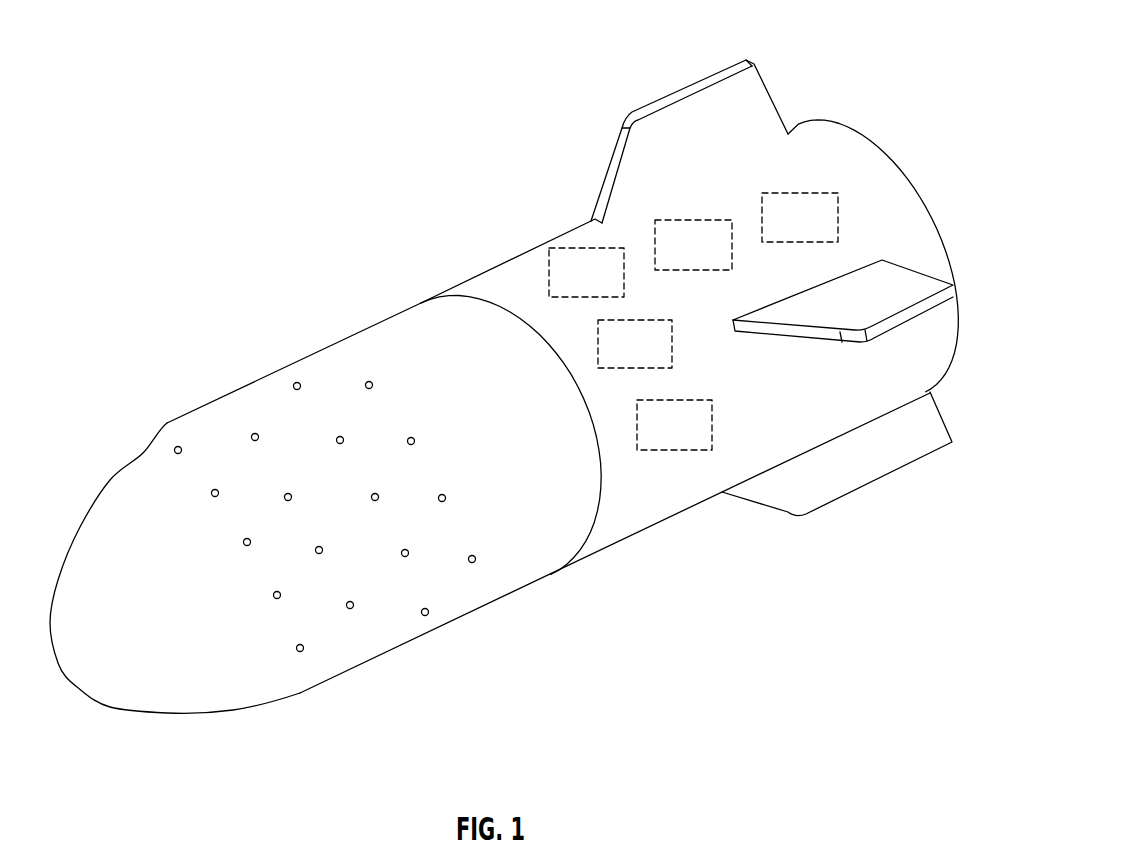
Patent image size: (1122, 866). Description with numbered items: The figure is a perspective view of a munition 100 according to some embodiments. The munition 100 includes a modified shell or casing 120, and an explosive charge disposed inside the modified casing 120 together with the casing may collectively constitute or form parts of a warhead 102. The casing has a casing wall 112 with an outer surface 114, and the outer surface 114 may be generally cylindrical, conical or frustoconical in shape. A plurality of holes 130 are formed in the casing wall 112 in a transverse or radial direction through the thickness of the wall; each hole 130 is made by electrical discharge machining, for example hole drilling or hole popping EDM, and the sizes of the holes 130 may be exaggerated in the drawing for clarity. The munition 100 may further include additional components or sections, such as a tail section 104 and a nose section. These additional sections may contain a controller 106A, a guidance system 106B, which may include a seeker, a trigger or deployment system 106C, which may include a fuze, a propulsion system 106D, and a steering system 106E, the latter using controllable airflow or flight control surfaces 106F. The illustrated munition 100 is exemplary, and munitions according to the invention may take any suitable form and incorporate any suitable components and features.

The munition 100 is at (256, 233).
The warhead 102 is at (495, 607).
The tail section 104 is at (791, 523).
The controller 106A is at (572, 247).
The guidance system 106B is at (717, 237).
The trigger or deployment system 106C is at (830, 217).
The propulsion system 106D is at (597, 341).
The steering system 106E is at (678, 433).
The flight control surfaces 106F is at (658, 122).
The casing wall 112 is at (193, 662).
The outer surface 114 is at (385, 623).
The modified shell or casing 120 is at (233, 390).
The holes 130 is at (242, 543).